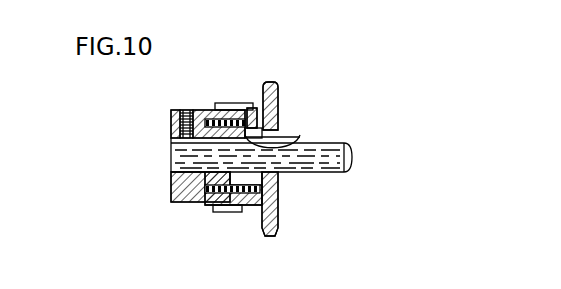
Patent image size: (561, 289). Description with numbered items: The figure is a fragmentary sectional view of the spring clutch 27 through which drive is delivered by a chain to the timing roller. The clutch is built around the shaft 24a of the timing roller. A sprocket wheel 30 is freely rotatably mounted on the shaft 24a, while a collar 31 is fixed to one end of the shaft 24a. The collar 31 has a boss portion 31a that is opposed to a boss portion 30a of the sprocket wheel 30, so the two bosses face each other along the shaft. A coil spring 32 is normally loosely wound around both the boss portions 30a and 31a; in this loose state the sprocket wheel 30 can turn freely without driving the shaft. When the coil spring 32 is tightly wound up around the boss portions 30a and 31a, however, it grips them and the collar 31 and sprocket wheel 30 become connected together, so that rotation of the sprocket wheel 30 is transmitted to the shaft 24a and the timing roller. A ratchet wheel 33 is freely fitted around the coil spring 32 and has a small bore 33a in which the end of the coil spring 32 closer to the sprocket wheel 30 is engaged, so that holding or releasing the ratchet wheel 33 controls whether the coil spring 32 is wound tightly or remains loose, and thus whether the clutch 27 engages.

The shaft 24a is at (316, 175).
The spring clutch 27 is at (228, 212).
The sprocket wheel 30 is at (279, 104).
The boss portion 30a is at (285, 137).
The collar 31 is at (176, 192).
The boss portion 31a is at (186, 153).
The coil spring 32 is at (212, 115).
The ratchet wheel 33 is at (212, 207).
The small bore 33a is at (251, 100).